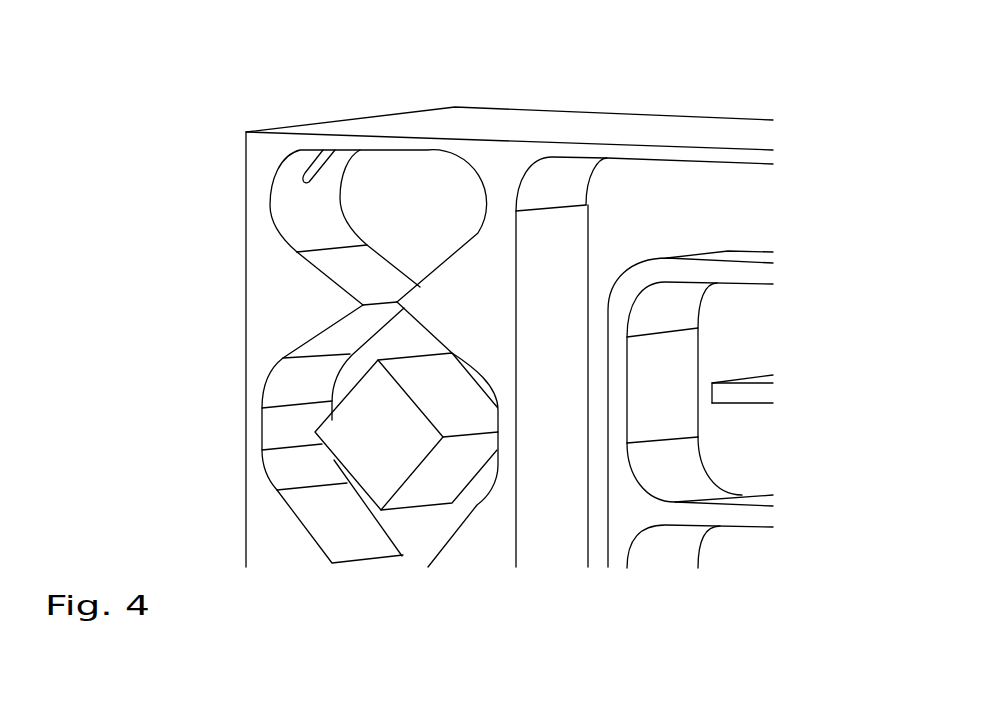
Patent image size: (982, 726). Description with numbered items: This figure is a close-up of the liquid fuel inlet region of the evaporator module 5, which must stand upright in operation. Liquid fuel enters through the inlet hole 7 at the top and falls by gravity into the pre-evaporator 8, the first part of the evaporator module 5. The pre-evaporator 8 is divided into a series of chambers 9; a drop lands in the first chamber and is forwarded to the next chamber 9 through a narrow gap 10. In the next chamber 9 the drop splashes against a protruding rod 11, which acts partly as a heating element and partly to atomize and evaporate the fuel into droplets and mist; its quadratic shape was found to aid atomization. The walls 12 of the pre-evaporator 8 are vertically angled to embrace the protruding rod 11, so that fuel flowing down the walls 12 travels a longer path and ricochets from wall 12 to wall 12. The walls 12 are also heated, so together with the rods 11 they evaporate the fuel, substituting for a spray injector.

The evaporator module 5 is at (652, 130).
The inlet hole 7 is at (305, 168).
The pre-evaporator 8 is at (372, 163).
The chamber 9 is at (407, 180).
The gap 10 is at (390, 302).
The protruding rod 11 is at (376, 443).
The wall 12 is at (302, 383).